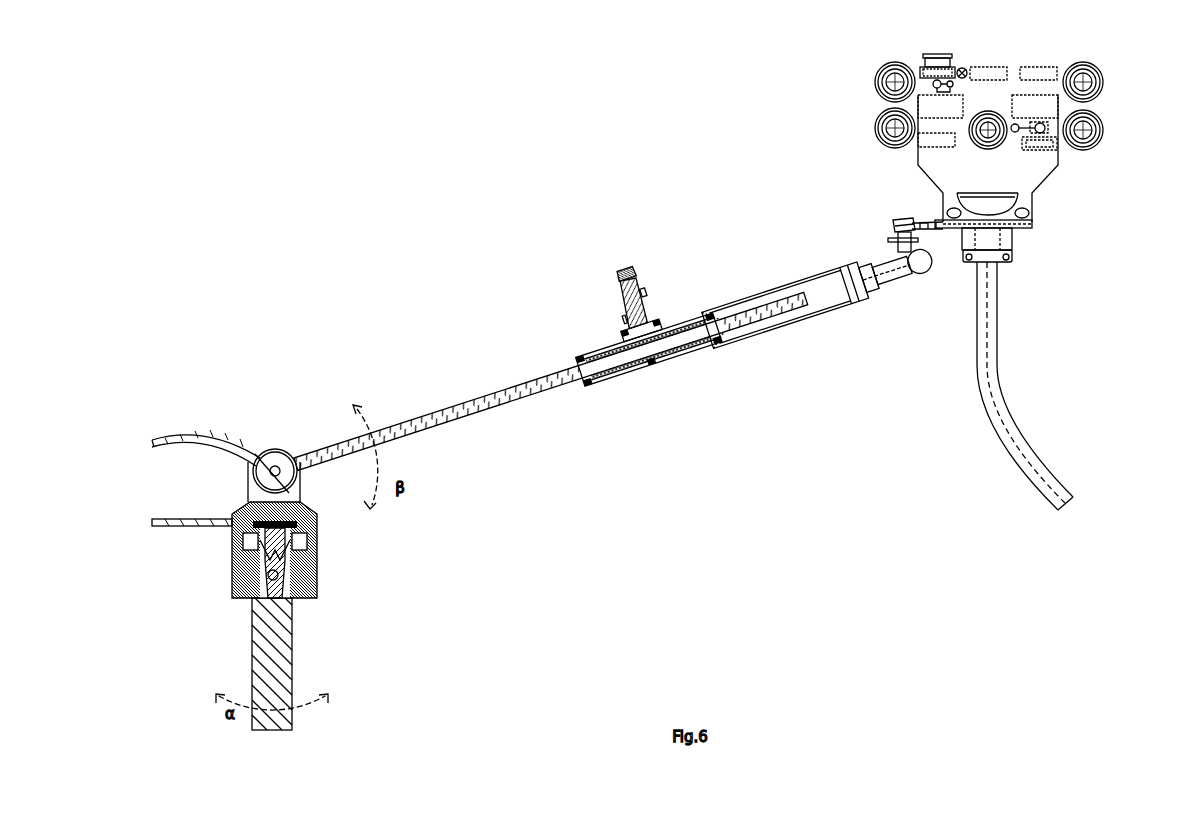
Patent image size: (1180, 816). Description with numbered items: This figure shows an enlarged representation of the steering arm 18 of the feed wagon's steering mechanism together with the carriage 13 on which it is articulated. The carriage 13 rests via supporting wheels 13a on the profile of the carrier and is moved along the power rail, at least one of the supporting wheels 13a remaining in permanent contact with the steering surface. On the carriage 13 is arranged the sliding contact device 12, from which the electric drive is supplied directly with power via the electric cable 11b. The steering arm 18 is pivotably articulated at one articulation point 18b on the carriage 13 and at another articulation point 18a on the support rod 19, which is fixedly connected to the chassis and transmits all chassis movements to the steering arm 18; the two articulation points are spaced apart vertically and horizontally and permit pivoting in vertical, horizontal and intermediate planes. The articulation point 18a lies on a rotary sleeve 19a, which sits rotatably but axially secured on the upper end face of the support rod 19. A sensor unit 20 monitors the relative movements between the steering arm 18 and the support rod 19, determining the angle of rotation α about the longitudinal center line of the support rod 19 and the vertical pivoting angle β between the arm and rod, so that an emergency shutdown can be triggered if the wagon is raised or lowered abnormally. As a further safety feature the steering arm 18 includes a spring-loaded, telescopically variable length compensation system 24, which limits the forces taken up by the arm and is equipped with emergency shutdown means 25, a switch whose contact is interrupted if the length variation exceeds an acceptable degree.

The electric cable 11b is at (998, 352).
The sliding contact device 12 is at (923, 62).
The carriage 13 is at (898, 175).
The supporting wheels 13a is at (877, 110).
The steering arm 18 is at (450, 422).
The articulation point 18a is at (268, 473).
The articulation point 18b is at (907, 275).
The support rod 19 is at (292, 650).
The rotary sleeve 19a is at (318, 524).
The sensor unit 20 is at (236, 428).
The length compensation system 24 is at (643, 371).
The emergency shutdown means 25 is at (620, 300).